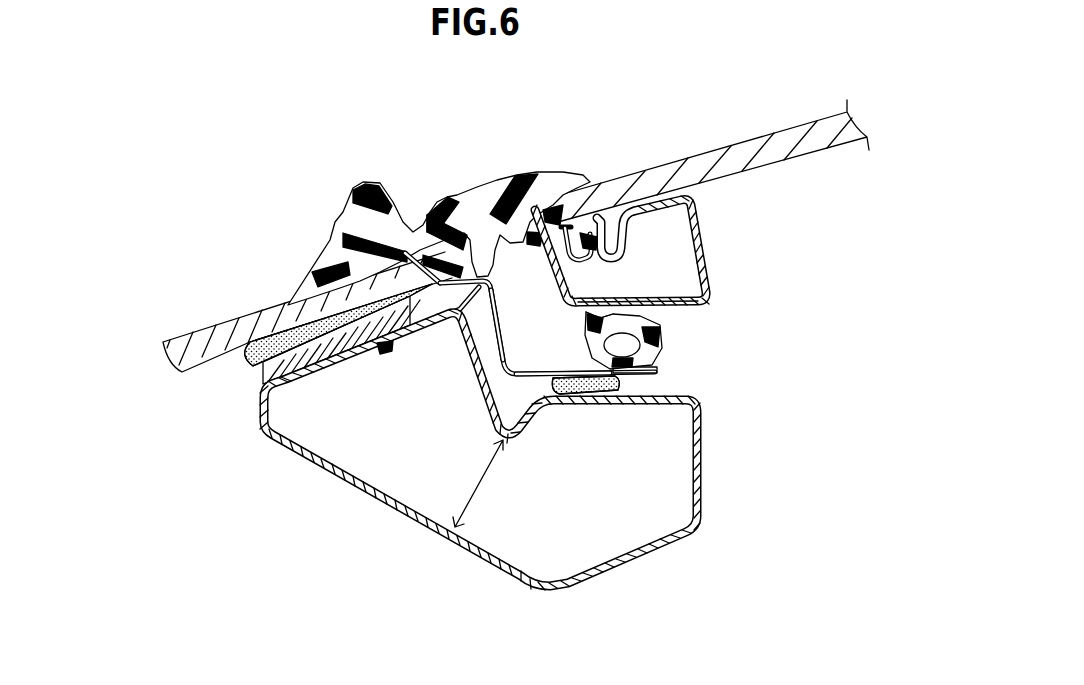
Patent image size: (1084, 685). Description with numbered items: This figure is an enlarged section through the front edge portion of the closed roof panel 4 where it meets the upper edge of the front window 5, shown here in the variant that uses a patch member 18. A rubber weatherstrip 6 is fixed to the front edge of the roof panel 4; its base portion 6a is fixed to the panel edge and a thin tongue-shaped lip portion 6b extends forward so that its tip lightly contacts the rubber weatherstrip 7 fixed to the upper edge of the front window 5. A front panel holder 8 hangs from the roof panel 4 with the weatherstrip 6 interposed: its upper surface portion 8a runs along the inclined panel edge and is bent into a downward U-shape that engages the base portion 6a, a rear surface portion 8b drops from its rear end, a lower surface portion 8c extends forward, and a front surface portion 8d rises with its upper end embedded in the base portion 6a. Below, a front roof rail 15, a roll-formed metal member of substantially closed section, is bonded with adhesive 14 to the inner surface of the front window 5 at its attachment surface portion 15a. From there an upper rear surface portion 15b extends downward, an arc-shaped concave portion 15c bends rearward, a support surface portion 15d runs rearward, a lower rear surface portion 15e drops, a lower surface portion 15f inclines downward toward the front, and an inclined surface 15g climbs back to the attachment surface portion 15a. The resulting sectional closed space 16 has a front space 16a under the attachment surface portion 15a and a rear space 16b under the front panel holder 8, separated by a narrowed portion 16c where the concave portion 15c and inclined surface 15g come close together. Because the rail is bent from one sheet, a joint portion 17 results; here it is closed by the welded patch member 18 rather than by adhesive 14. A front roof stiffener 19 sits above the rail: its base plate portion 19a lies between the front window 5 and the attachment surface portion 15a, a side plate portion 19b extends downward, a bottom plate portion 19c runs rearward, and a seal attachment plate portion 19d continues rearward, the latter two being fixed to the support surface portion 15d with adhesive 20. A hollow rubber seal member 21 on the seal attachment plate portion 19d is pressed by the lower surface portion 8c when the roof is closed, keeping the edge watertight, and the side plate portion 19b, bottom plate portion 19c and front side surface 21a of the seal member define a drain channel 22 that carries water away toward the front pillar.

The roof panel 4 is at (790, 138).
The front window 5 is at (190, 340).
The weatherstrip 6 is at (439, 208).
The base portion 6a is at (552, 183).
The lip portion 6b is at (443, 200).
The weatherstrip 7 is at (353, 212).
The front panel holder 8 is at (673, 214).
The upper surface portion 8a is at (647, 208).
The rear surface portion 8b is at (703, 235).
The lower surface portion 8c is at (640, 299).
The front surface portion 8d is at (574, 268).
The adhesive 14 is at (250, 366).
The front roof rail 15 is at (485, 461).
The attachment surface portion 15a is at (383, 352).
The upper rear surface portion 15b is at (474, 372).
The concave portion 15c is at (530, 442).
The support surface portion 15d is at (618, 402).
The lower rear surface portion 15e is at (702, 470).
The lower surface portion 15f is at (646, 567).
The inclined surface 15g is at (405, 515).
The sectional closed space 16 is at (482, 507).
The front space 16a is at (414, 466).
The rear space 16b is at (632, 502).
The narrowed portion 16c is at (480, 483).
The joint portion 17 is at (320, 376).
The patch member 18 is at (262, 380).
The front roof stiffener 19 is at (569, 261).
The base plate portion 19a is at (413, 247).
The side plate portion 19b is at (495, 292).
The bottom plate portion 19c is at (540, 375).
The seal attachment plate portion 19d is at (645, 373).
The adhesive 20 is at (625, 386).
The seal member 21 is at (631, 339).
The side surface 21a is at (590, 350).
The drain channel 22 is at (536, 336).